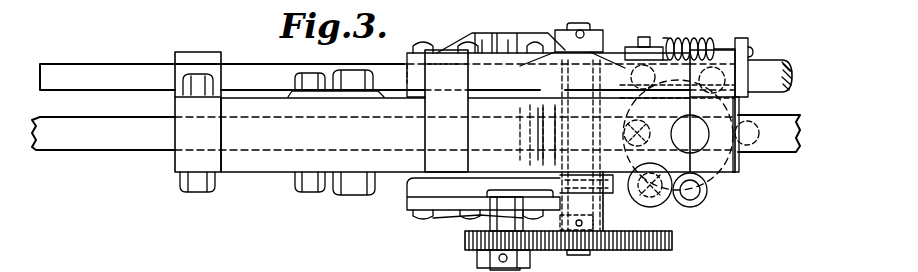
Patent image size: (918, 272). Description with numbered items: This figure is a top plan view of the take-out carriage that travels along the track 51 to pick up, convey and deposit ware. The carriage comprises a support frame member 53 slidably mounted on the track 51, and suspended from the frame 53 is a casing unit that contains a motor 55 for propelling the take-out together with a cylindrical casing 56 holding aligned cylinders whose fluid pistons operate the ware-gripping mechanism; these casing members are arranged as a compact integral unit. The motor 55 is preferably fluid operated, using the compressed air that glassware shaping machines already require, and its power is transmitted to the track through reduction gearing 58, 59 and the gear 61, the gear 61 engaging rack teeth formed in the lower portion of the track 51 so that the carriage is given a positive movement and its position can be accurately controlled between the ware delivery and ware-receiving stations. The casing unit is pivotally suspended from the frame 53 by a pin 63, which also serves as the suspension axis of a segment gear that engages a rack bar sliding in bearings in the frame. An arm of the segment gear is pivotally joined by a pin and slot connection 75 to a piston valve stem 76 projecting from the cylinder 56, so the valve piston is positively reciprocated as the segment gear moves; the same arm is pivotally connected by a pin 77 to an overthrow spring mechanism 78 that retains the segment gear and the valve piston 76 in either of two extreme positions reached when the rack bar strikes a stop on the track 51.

The track 51 is at (117, 152).
The support frame member 53 is at (252, 175).
The motor 55 is at (398, 198).
The cylindrical casing 56 is at (740, 152).
The reduction gearing 58 is at (463, 237).
The reduction gearing 59 is at (673, 243).
The gear 61 is at (535, 135).
The pin 63 is at (565, 24).
The pin and slot connection 75 is at (683, 124).
The piston valve stem 76 is at (625, 121).
The pin 77 is at (644, 40).
The overthrow spring mechanism 78 is at (686, 40).